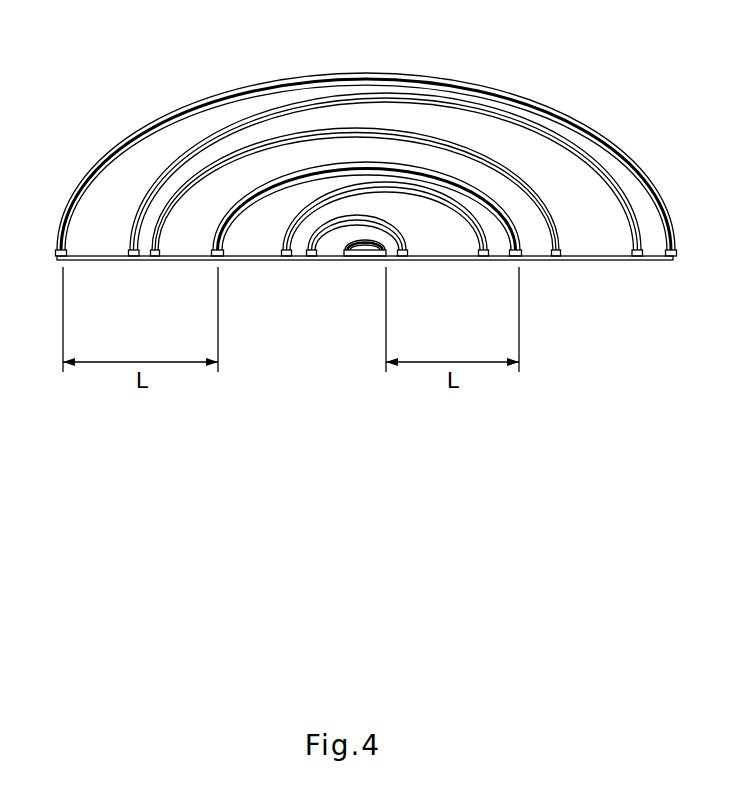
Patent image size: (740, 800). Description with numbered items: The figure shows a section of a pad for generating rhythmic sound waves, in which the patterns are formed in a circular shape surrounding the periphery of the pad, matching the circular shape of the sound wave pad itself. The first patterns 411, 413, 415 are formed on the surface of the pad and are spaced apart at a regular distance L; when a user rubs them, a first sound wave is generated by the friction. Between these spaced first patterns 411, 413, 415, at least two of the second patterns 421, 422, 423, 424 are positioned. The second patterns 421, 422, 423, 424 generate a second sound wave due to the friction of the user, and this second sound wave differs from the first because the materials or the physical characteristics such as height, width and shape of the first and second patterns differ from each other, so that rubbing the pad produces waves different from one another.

The first pattern 411 is at (363, 238).
The first pattern 413 is at (293, 173).
The first pattern 415 is at (88, 170).
The second pattern 421 is at (324, 235).
The second pattern 422 is at (283, 240).
The second pattern 423 is at (213, 160).
The second pattern 424 is at (155, 178).